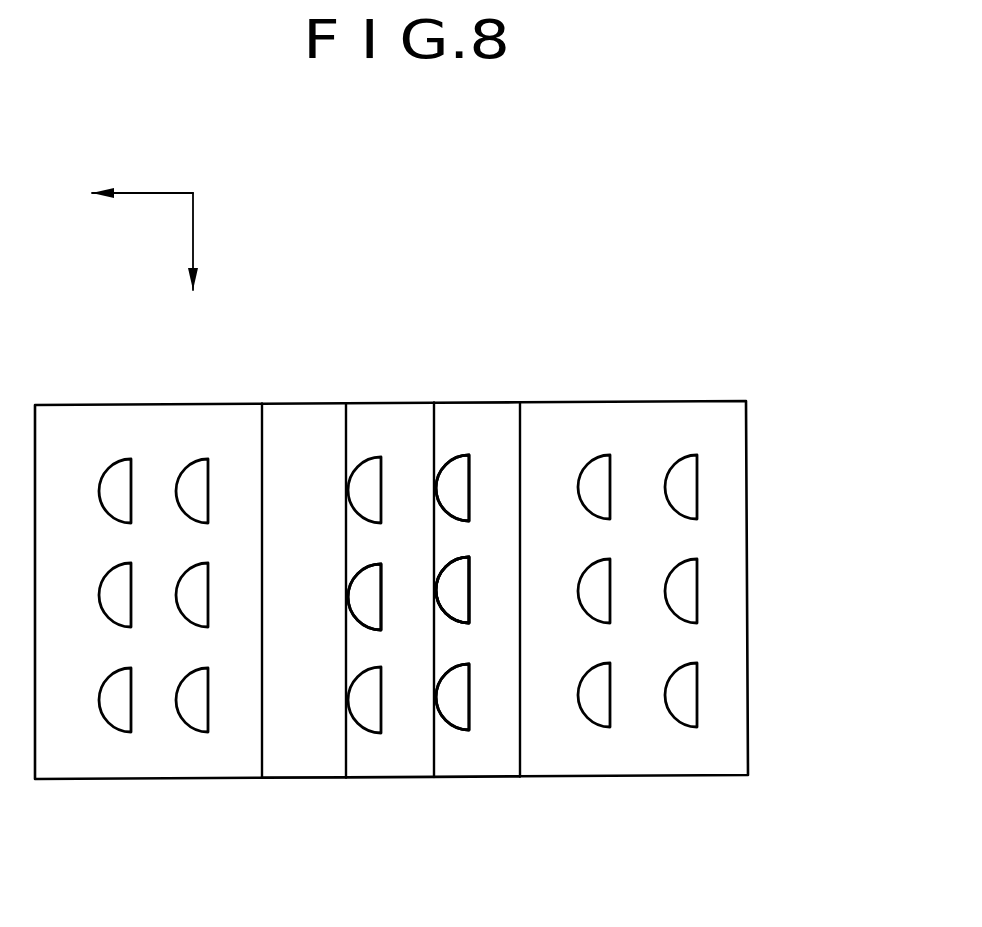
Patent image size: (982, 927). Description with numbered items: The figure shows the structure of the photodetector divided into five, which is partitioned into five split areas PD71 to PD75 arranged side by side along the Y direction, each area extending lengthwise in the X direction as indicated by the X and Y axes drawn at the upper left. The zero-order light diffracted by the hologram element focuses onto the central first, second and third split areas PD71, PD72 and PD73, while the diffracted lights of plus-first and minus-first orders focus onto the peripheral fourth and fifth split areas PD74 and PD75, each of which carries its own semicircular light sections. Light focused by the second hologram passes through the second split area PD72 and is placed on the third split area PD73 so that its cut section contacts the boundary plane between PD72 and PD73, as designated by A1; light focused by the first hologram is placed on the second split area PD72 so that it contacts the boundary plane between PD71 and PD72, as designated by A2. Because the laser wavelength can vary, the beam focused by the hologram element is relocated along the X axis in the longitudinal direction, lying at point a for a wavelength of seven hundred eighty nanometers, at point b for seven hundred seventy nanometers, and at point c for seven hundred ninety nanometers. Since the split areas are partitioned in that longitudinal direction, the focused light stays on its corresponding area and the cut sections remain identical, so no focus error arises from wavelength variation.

The first split area PD71 is at (301, 423).
The second split area PD72 is at (388, 423).
The third split area PD73 is at (477, 423).
The fourth split area PD74 is at (108, 423).
The fifth split area PD75 is at (732, 642).
The light section on third split area A1 is at (470, 620).
The light section on second split area A2 is at (348, 598).
The focusing point at 780 nm a is at (484, 591).
The focusing point at 770 nm b is at (482, 463).
The focusing point at 790 nm c is at (471, 742).
The X-axis X is at (195, 262).
The Y-axis Y is at (132, 194).